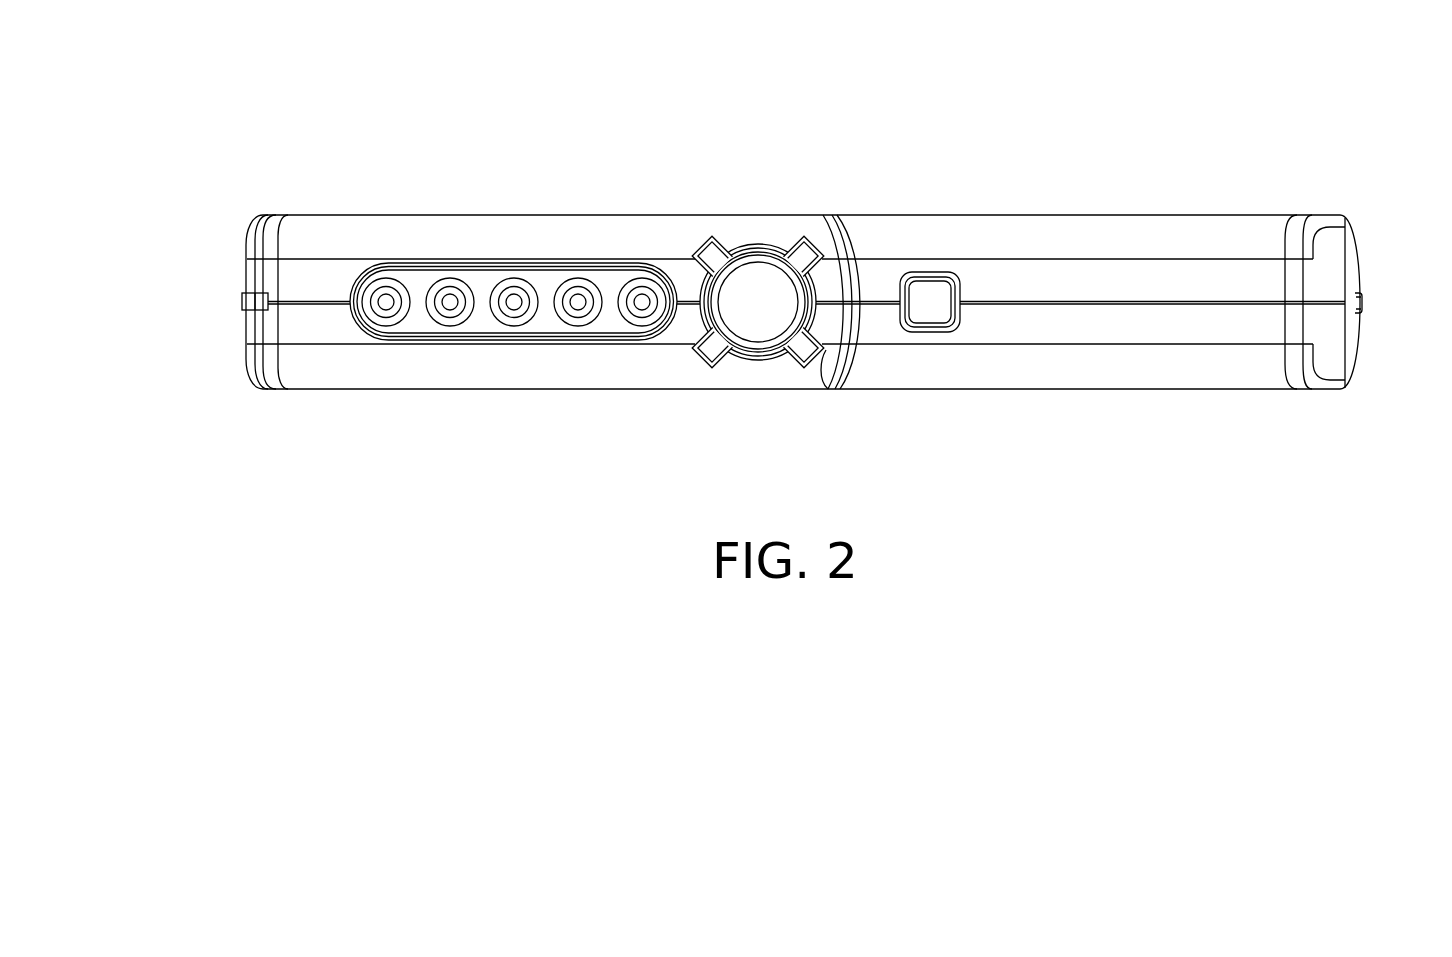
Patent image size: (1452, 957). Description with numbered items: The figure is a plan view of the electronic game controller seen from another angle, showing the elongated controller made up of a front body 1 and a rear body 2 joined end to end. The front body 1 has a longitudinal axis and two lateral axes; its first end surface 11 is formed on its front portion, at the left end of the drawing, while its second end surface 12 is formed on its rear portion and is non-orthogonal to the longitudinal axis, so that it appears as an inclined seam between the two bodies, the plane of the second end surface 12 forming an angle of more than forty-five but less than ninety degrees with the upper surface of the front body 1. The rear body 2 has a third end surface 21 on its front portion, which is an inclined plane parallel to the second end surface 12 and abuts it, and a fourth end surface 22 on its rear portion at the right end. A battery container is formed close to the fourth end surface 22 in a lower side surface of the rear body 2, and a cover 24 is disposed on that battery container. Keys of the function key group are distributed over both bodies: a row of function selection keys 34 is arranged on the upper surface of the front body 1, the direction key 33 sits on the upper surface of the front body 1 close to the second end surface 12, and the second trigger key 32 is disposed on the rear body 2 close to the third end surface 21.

The front body 1 is at (302, 213).
The rear body 2 is at (1167, 213).
The first end surface 11 is at (243, 316).
The second end surface 12 is at (853, 277).
The third end surface 21 is at (850, 328).
The fourth end surface 22 is at (1332, 258).
The cover 24 is at (1353, 326).
The second trigger key 32 is at (937, 287).
The direction key 33 is at (757, 273).
The function selection keys 34 is at (385, 275).